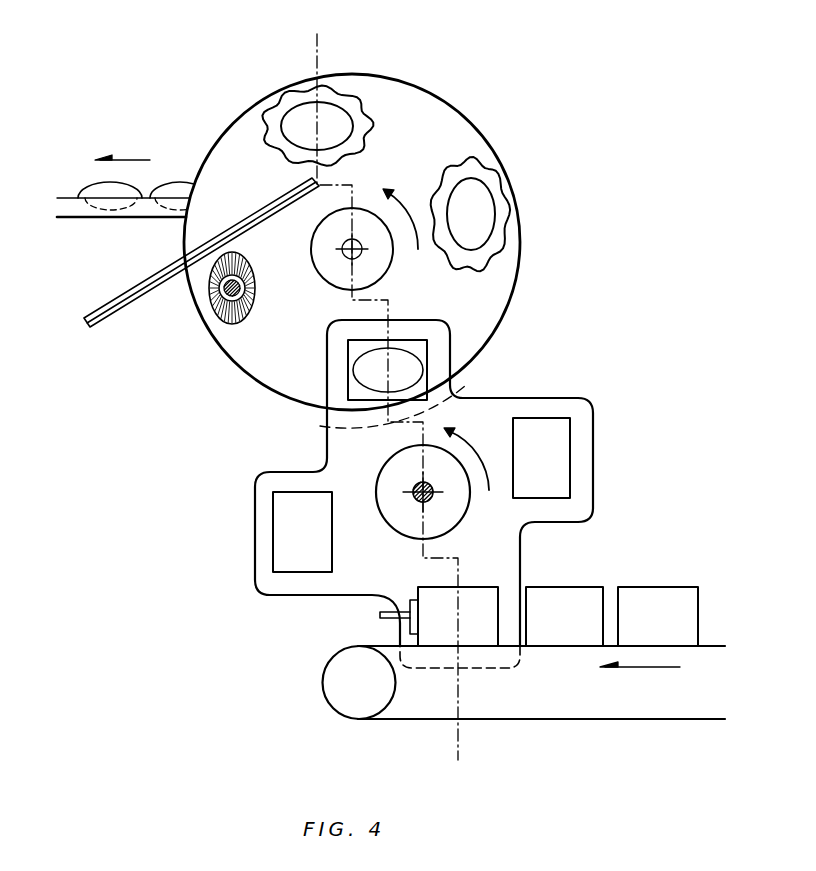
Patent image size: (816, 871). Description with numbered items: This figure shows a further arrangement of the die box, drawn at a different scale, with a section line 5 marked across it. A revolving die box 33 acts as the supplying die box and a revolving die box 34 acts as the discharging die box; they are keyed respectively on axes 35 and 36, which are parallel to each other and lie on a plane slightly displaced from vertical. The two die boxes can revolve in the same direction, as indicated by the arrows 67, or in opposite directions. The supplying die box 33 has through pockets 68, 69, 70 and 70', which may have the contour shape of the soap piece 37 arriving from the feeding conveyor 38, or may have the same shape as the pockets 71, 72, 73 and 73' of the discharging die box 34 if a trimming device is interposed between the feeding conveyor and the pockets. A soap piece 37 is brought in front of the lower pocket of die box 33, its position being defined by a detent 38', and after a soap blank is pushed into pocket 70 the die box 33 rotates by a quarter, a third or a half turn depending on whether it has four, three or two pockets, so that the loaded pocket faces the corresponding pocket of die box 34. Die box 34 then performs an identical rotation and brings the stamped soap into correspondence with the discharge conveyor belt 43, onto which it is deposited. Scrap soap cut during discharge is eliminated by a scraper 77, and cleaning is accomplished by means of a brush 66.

The section line 5- 5 is at (437, 755).
The revolving die box 33 is at (555, 407).
The revolving die box 34 is at (433, 137).
The axis 35 is at (418, 498).
The axis 36 is at (346, 255).
The soap piece 37 is at (633, 600).
The feeding conveyor 38 is at (524, 682).
The detent 38' is at (375, 623).
The discharge conveyor belt 43 is at (146, 221).
The brush 66 is at (215, 299).
The arrows 67 is at (473, 455).
The through pocket 68 is at (560, 480).
The through pocket 69 is at (358, 390).
The through pocket 70 is at (481, 596).
The through pocket 70' is at (273, 532).
The pocket 71 is at (340, 125).
The pocket 72 is at (475, 200).
The pocket 73 is at (412, 360).
The pocket 73' is at (197, 344).
The scraper 77 is at (128, 302).